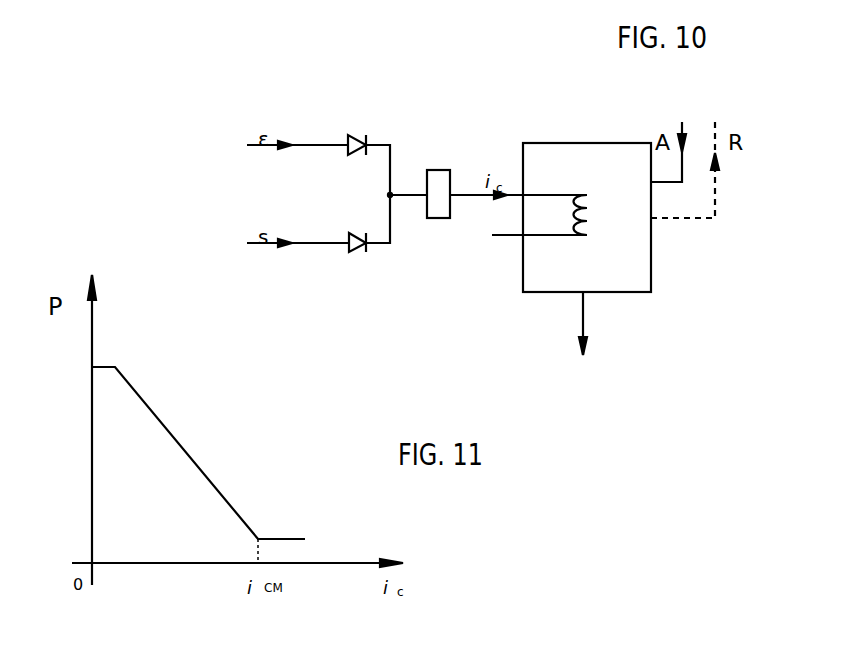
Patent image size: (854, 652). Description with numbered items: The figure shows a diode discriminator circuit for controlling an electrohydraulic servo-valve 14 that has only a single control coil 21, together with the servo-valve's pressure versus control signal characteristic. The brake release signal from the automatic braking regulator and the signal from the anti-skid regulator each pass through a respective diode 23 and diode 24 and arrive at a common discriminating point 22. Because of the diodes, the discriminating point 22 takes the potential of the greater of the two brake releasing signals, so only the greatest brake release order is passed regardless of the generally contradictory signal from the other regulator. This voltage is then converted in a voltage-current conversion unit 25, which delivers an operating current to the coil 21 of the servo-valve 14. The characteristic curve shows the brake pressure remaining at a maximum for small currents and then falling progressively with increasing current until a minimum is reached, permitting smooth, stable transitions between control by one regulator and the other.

The electrohydraulic servo-valve 14 is at (622, 273).
The control coil 21 is at (577, 193).
The discriminating point 22 is at (392, 193).
The diode 23 is at (353, 137).
The diode 24 is at (355, 252).
The voltage-current conversion unit 25 is at (441, 210).